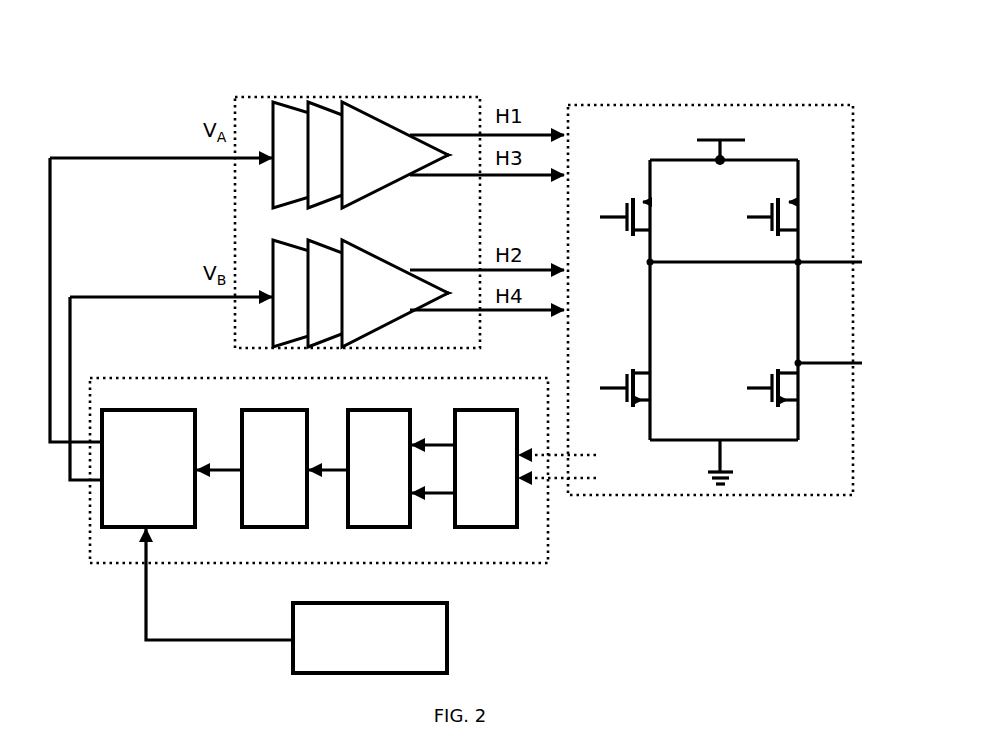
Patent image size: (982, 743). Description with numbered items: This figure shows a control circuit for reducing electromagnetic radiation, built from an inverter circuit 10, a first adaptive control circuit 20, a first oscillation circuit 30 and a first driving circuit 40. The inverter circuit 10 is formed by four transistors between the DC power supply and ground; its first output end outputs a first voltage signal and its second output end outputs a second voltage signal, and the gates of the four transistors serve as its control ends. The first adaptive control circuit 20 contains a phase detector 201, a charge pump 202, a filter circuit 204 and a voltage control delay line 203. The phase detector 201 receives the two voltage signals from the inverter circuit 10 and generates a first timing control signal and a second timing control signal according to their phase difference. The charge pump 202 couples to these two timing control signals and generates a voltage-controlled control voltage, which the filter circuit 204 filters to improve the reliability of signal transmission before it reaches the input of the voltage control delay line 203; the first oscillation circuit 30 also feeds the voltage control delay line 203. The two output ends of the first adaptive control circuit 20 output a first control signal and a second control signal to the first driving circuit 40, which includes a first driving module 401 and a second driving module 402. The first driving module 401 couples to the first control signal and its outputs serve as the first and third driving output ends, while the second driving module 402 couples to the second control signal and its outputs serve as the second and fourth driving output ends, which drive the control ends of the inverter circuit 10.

The inverter circuit 10 is at (852, 105).
The first adaptive control circuit 20 is at (358, 494).
The first oscillation circuit 30 is at (450, 640).
The first driving circuit 40 is at (377, 190).
The first driving module 401 is at (325, 98).
The second driving module 402 is at (383, 253).
The phase detector 201 is at (494, 527).
The charge pump 202 is at (383, 527).
The voltage control delay line 203 is at (184, 527).
The filter circuit 204 is at (275, 527).